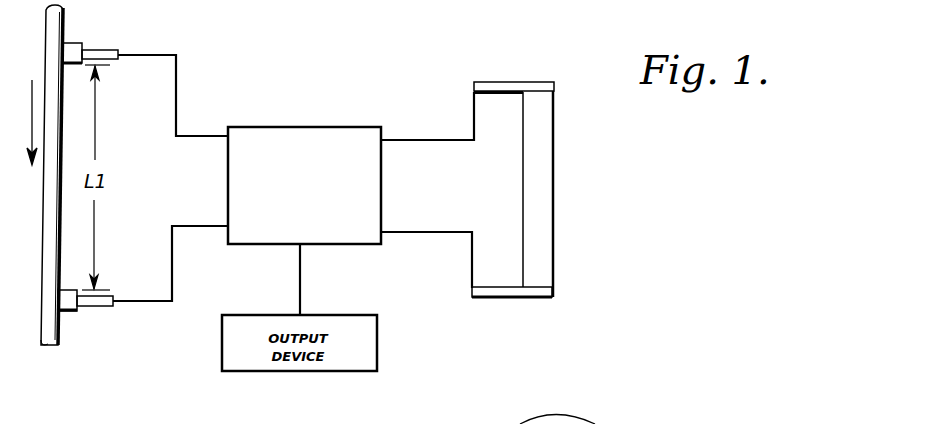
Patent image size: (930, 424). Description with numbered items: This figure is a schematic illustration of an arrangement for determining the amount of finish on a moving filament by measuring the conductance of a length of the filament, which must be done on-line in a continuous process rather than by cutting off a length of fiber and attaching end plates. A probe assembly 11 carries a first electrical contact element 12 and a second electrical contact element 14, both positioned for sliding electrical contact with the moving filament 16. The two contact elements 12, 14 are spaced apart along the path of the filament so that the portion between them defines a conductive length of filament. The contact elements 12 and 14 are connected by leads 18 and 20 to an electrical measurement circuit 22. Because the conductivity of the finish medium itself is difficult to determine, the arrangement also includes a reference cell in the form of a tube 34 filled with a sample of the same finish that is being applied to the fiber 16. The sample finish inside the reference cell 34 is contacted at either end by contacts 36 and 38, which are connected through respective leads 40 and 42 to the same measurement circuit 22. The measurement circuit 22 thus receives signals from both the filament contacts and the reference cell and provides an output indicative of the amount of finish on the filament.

The probe assembly 11 is at (163, 46).
The first electrical contact element 12 is at (80, 43).
The second electrical contact element 14 is at (70, 315).
The moving filament 16 is at (60, 338).
The lead 18 is at (177, 92).
The lead 20 is at (173, 272).
The electrical measurement circuit 22 is at (327, 126).
The tube 34 is at (550, 187).
The contact 36 is at (512, 83).
The contact 38 is at (505, 297).
The lead 40 is at (426, 135).
The lead 42 is at (429, 234).